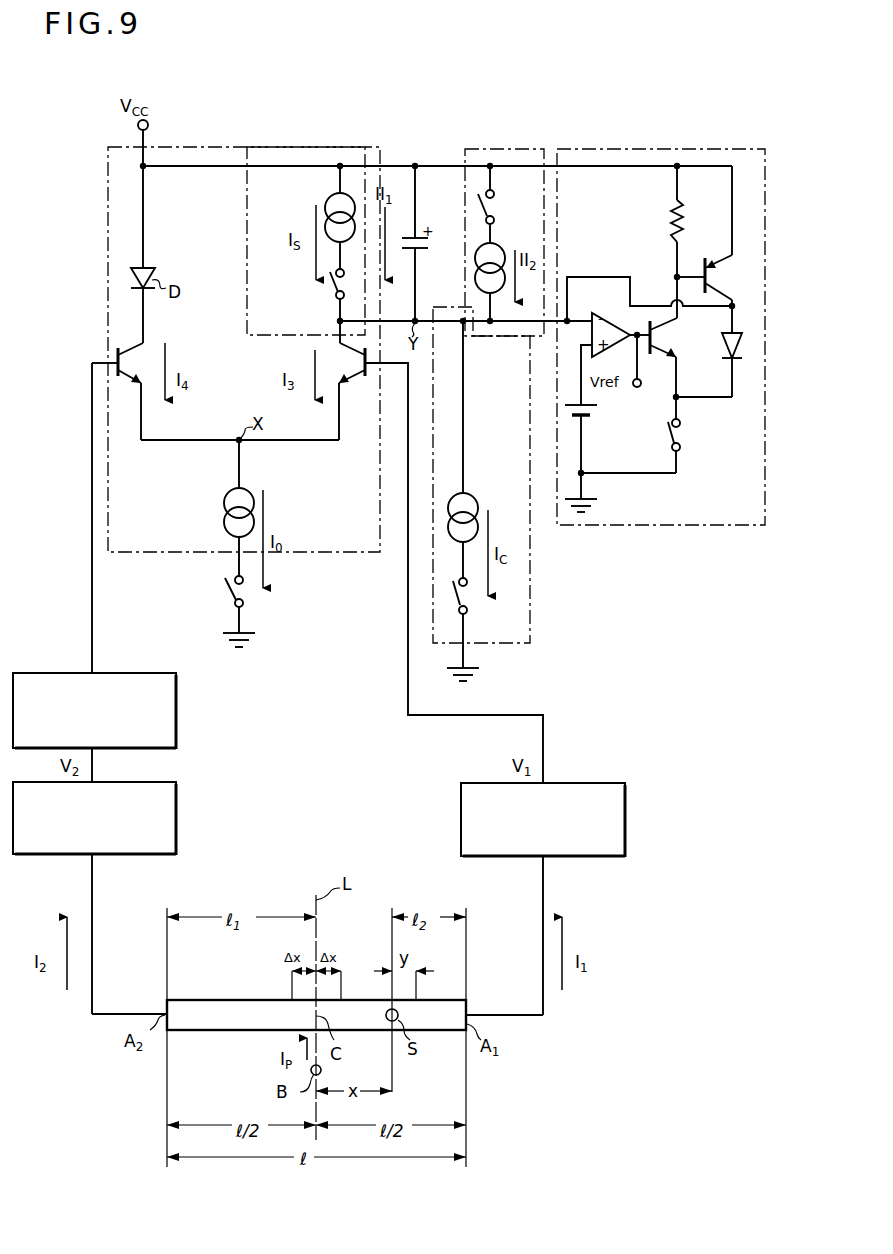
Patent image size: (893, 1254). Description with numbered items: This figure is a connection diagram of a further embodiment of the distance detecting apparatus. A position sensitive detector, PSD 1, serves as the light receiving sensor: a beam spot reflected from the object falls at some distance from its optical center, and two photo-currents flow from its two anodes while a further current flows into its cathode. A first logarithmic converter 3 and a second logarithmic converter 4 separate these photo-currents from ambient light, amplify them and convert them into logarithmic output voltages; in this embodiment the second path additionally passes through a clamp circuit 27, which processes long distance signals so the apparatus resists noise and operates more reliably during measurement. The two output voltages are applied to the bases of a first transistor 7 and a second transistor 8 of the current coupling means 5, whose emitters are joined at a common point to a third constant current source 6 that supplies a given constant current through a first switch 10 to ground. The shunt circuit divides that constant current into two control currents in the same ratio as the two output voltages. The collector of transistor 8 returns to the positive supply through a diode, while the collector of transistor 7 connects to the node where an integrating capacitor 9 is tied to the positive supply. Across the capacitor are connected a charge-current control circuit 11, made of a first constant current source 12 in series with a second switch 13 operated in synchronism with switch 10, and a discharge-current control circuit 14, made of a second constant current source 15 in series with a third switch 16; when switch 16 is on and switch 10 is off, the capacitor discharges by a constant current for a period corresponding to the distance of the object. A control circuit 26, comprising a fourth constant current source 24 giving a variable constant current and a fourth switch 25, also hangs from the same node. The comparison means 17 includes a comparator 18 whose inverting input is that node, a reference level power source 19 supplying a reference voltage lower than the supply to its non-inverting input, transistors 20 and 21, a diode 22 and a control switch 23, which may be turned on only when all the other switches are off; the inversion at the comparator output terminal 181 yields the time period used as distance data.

The PSD 1 is at (228, 1000).
The first logarithmic converter 3 is at (580, 782).
The second logarithmic converter 4 is at (172, 782).
The current coupling means 5 is at (188, 147).
The third constant current source 6 is at (225, 496).
The first transistor 7 is at (355, 380).
The second transistor 8 is at (128, 380).
The integrating capacitor 9 is at (420, 252).
The first switch 10 is at (232, 599).
The charge-current control circuit 11 is at (318, 148).
The first constant current source 12 is at (330, 200).
The second switch 13 is at (334, 302).
The discharge-current control circuit 14 is at (485, 149).
The second constant current source 15 is at (500, 245).
The third switch 16 is at (494, 200).
The comparison means 17 is at (700, 150).
The comparator 18 is at (608, 313).
The output terminal of comparator 181 is at (641, 386).
The reference level power source 19 is at (588, 418).
The transistor 20 is at (662, 328).
The transistor 21 is at (722, 262).
The diode 22 is at (722, 360).
The control switch 23 is at (682, 440).
The fourth constant current source 24 is at (472, 497).
The fourth switch 25 is at (467, 595).
The control circuit 26 is at (527, 545).
The clamp circuit 27 is at (154, 656).